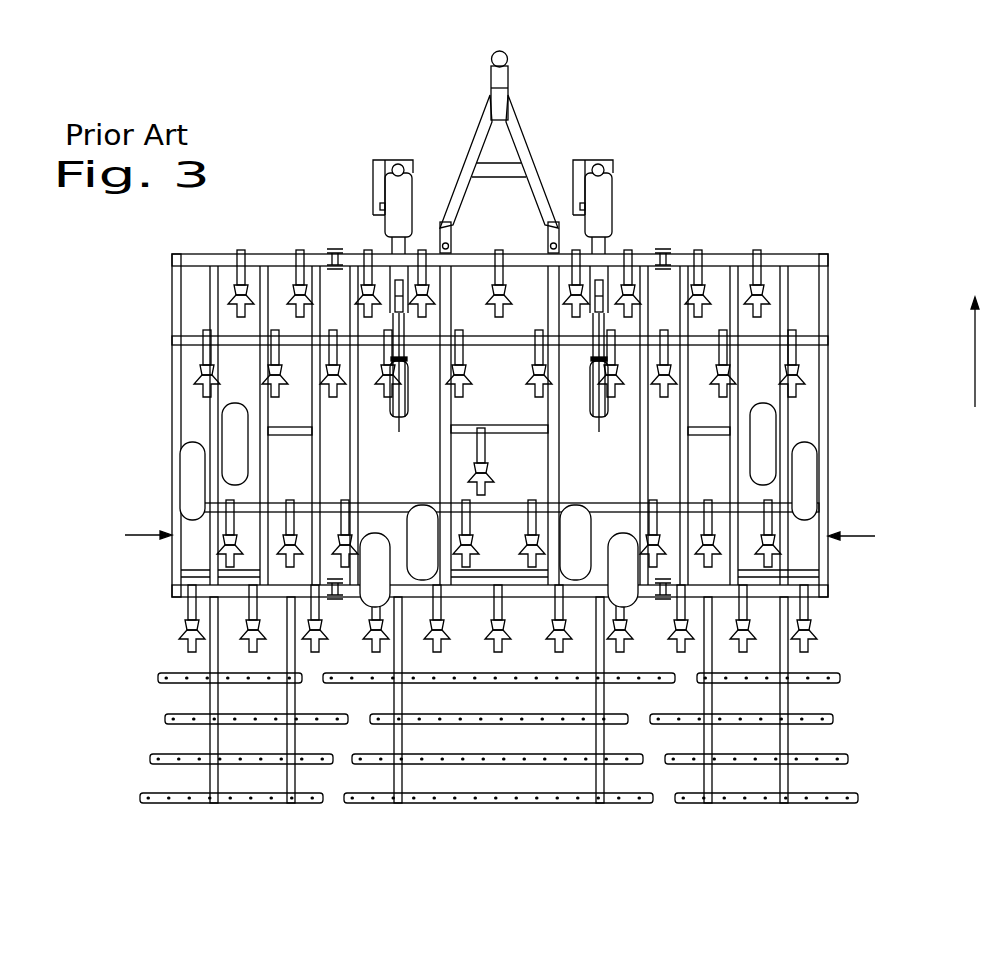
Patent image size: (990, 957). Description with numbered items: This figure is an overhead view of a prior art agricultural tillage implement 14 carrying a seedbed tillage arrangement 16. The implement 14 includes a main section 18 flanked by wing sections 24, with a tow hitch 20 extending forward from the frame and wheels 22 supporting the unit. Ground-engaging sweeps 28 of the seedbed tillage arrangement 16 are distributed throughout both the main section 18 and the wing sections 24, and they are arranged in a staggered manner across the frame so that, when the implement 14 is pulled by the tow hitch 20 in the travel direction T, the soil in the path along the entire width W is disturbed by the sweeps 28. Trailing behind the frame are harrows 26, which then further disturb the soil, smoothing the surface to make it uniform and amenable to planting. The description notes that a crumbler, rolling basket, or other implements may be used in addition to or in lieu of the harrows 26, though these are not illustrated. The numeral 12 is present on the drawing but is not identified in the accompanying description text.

The main frame 12 is at (617, 258).
The agricultural tillage implement 14 is at (734, 155).
The seedbed tillage arrangement 16 is at (859, 336).
The main section 18 is at (480, 252).
The tow hitch 20 is at (505, 80).
The wheels 22 is at (765, 432).
The wing sections 24 is at (170, 308).
The harrows 26 is at (210, 816).
The ground-engaging sweeps 28 is at (763, 297).